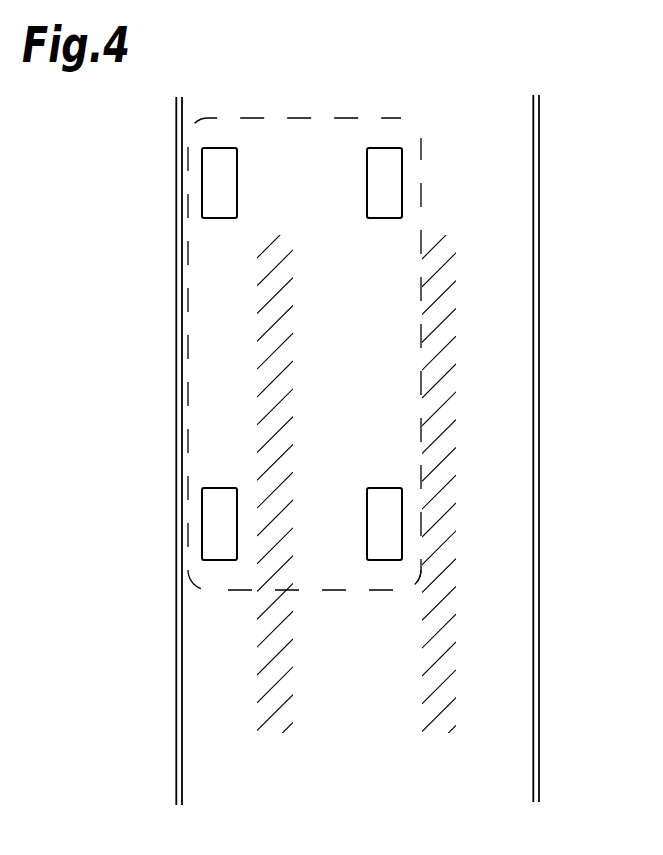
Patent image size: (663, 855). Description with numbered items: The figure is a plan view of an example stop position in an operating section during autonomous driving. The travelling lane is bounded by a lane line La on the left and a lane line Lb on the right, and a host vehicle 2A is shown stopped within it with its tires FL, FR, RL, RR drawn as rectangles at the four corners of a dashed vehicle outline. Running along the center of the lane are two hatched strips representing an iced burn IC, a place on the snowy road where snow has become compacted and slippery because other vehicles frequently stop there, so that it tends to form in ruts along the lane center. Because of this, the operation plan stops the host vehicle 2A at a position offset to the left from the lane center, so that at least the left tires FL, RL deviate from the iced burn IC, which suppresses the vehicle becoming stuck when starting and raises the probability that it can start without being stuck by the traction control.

The host vehicle 2A is at (383, 119).
The tire FL is at (202, 185).
The tire FR is at (402, 187).
The tire RL is at (202, 523).
The tire RR is at (383, 560).
The iced burn IC is at (441, 408).
The lane line La is at (175, 714).
The lane line Lb is at (540, 705).